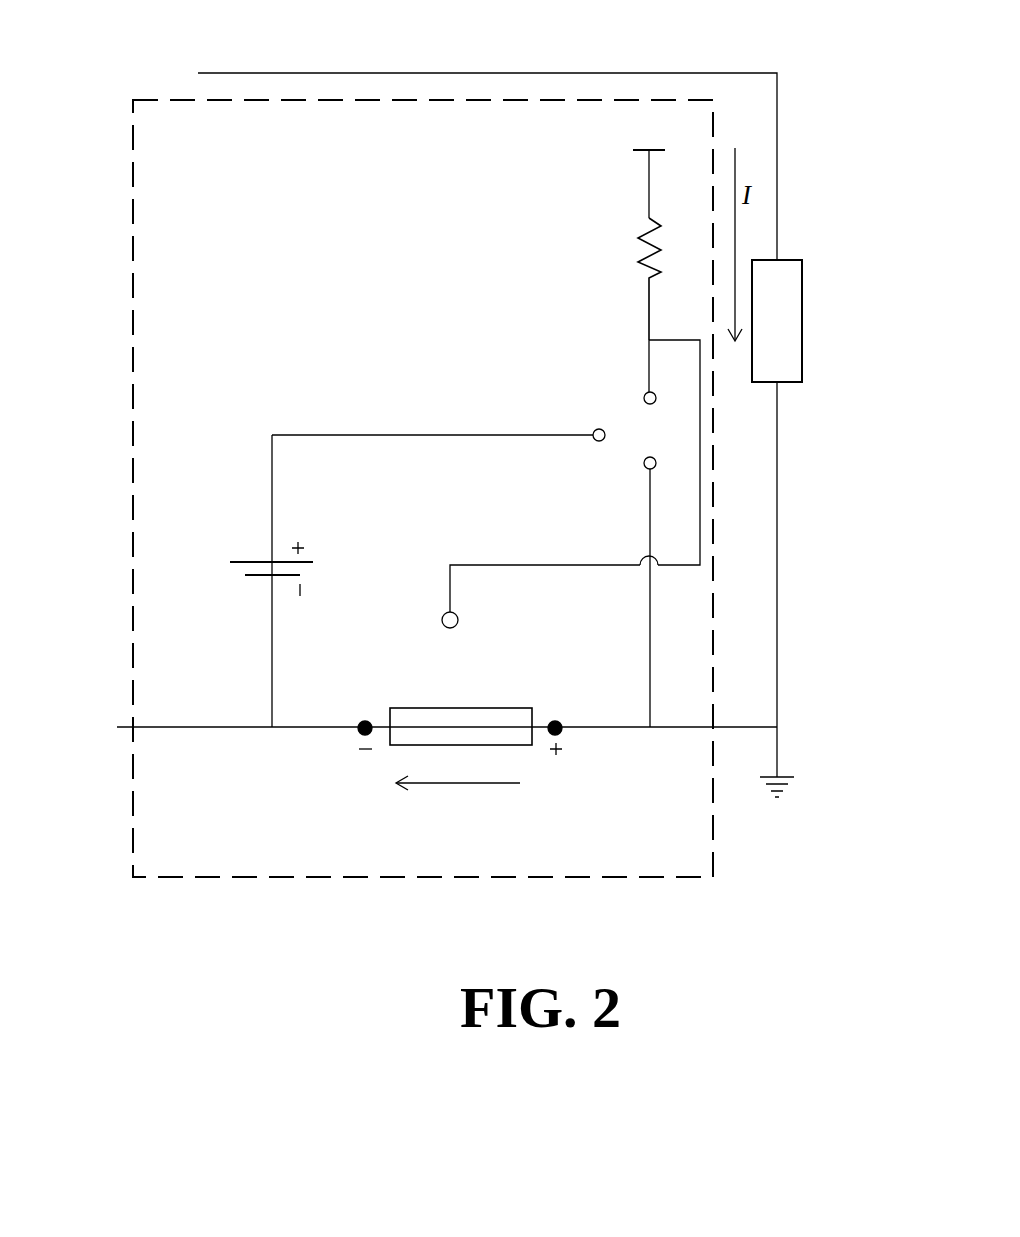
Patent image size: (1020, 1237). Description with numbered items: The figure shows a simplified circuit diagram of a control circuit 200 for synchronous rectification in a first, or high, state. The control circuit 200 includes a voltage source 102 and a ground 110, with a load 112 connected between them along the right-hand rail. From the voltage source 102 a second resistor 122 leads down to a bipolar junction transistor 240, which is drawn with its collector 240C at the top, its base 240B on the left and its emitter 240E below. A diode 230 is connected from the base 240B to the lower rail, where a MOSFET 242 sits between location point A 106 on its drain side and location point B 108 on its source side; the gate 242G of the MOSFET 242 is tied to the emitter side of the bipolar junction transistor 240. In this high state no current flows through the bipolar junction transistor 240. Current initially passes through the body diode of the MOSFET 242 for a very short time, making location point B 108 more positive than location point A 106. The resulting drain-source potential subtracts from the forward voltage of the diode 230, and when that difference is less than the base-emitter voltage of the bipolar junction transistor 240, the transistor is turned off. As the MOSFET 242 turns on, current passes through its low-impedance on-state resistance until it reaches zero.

The control circuit 200 is at (184, 95).
The voltage source 102 is at (626, 136).
The second resistor 122 is at (625, 254).
The load 112 is at (797, 247).
The bipolar junction transistor 240 is at (486, 526).
The collector 240C is at (641, 396).
The base 240B is at (594, 427).
The emitter 240E is at (608, 592).
The diode 230 is at (226, 572).
The gate 242G is at (459, 618).
The MOSFET 242 is at (466, 803).
The location point A 106 is at (358, 759).
The location point B 108 is at (563, 758).
The ground 110 is at (795, 771).